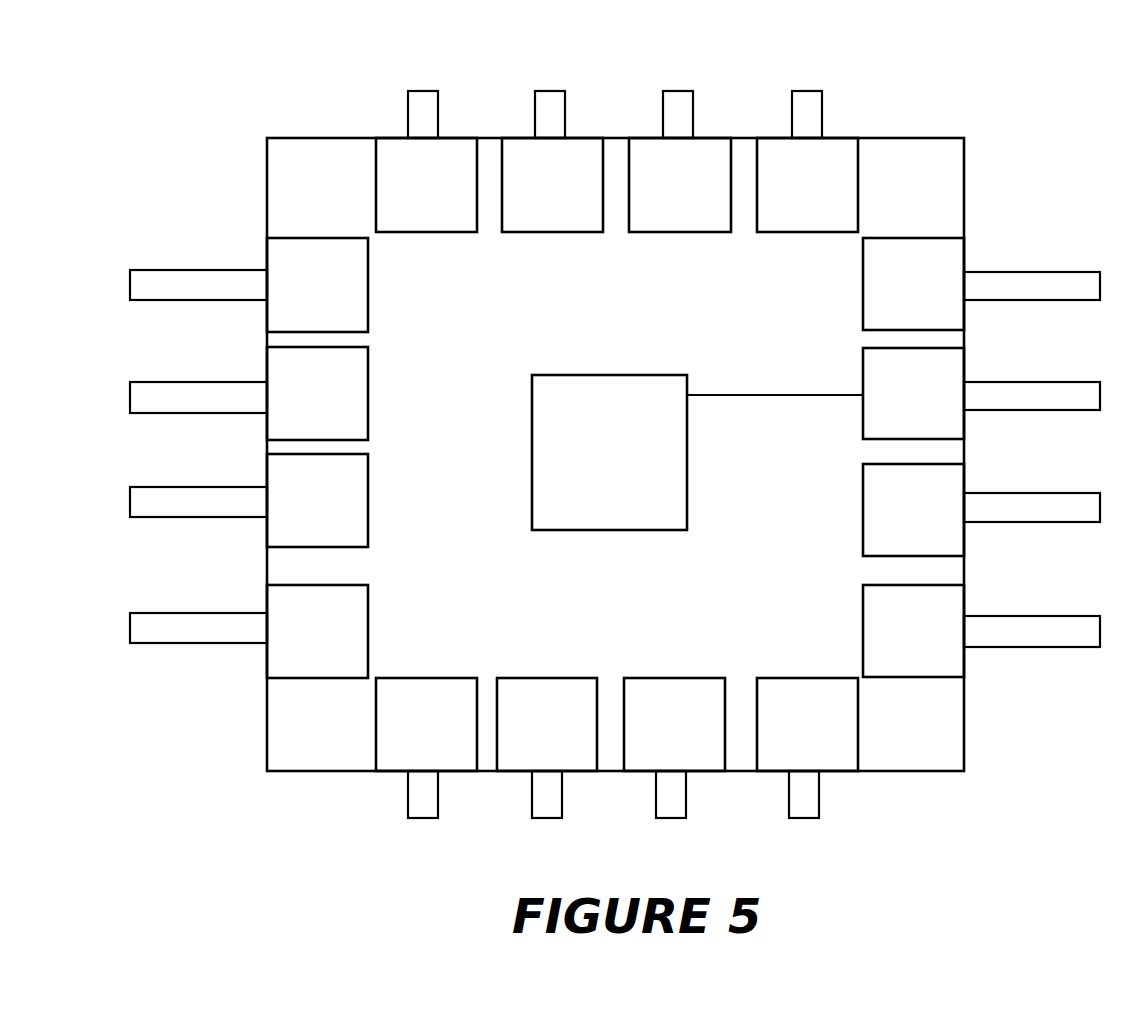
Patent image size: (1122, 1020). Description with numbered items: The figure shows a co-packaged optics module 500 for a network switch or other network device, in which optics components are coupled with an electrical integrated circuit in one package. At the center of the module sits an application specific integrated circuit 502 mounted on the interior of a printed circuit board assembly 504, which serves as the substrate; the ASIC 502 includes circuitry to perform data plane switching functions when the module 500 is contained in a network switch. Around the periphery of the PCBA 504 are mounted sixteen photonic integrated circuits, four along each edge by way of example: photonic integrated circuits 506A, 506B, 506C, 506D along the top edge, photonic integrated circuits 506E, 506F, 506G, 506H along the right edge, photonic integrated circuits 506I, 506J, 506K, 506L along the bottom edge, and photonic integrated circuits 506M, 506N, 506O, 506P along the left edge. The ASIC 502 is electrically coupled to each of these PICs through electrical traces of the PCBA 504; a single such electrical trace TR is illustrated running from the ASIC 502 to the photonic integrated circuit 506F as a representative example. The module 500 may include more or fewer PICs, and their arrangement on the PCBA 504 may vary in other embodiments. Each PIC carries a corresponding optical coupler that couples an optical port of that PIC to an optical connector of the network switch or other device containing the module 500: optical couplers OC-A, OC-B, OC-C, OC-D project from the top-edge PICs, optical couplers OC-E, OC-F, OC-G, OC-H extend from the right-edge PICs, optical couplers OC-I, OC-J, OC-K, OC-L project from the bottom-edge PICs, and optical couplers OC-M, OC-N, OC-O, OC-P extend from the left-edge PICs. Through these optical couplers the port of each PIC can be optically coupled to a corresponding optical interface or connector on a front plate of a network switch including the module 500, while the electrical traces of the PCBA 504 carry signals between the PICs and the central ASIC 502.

The co-packaged optics module 500 is at (266, 107).
The application specific integrated circuit 502 is at (587, 480).
The printed circuit board assembly 504 is at (789, 632).
The photonic integrated circuit 506A is at (397, 212).
The photonic integrated circuit 506B is at (523, 212).
The photonic integrated circuit 506C is at (650, 212).
The photonic integrated circuit 506D is at (777, 212).
The photonic integrated circuit 506E is at (884, 312).
The photonic integrated circuit 506F is at (885, 422).
The photonic integrated circuit 506G is at (883, 538).
The photonic integrated circuit 506H is at (883, 659).
The photonic integrated circuit 506I is at (782, 752).
The photonic integrated circuit 506J is at (649, 752).
The photonic integrated circuit 506K is at (518, 752).
The photonic integrated circuit 506L is at (398, 752).
The photonic integrated circuit 506M is at (286, 659).
The photonic integrated circuit 506N is at (287, 528).
The photonic integrated circuit 506O is at (286, 421).
The photonic integrated circuit 506P is at (289, 312).
The optical coupler OC-A is at (422, 91).
The optical coupler OC-B is at (549, 91).
The optical coupler OC-C is at (676, 91).
The optical coupler OC-D is at (805, 91).
The optical coupler OC-E is at (988, 272).
The optical coupler OC-F is at (988, 382).
The optical coupler OC-G is at (988, 493).
The optical coupler OC-H is at (985, 616).
The optical coupler OC-I is at (819, 797).
The optical coupler OC-J is at (686, 797).
The optical coupler OC-K is at (562, 801).
The optical coupler OC-L is at (438, 795).
The optical coupler OC-M is at (144, 613).
The optical coupler OC-N is at (143, 487).
The optical coupler OC-O is at (147, 382).
The optical coupler OC-P is at (143, 270).
The electrical trace TR is at (750, 395).